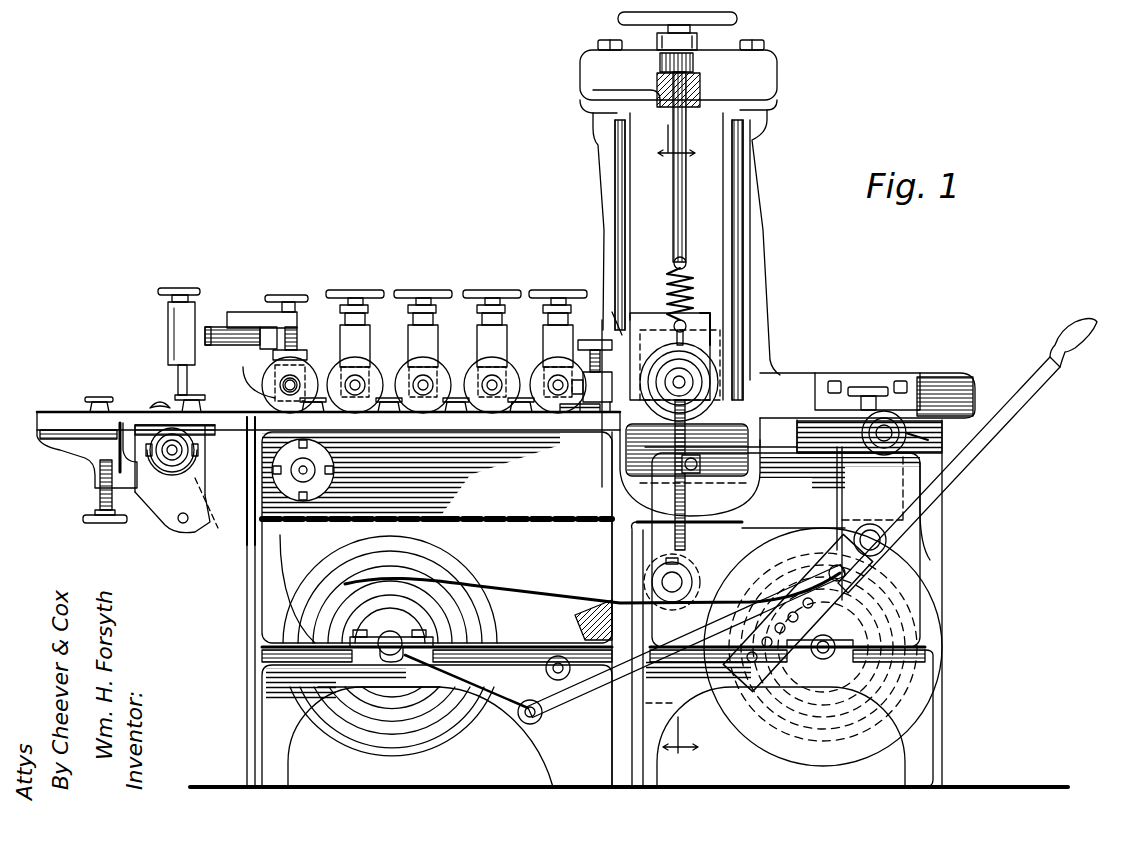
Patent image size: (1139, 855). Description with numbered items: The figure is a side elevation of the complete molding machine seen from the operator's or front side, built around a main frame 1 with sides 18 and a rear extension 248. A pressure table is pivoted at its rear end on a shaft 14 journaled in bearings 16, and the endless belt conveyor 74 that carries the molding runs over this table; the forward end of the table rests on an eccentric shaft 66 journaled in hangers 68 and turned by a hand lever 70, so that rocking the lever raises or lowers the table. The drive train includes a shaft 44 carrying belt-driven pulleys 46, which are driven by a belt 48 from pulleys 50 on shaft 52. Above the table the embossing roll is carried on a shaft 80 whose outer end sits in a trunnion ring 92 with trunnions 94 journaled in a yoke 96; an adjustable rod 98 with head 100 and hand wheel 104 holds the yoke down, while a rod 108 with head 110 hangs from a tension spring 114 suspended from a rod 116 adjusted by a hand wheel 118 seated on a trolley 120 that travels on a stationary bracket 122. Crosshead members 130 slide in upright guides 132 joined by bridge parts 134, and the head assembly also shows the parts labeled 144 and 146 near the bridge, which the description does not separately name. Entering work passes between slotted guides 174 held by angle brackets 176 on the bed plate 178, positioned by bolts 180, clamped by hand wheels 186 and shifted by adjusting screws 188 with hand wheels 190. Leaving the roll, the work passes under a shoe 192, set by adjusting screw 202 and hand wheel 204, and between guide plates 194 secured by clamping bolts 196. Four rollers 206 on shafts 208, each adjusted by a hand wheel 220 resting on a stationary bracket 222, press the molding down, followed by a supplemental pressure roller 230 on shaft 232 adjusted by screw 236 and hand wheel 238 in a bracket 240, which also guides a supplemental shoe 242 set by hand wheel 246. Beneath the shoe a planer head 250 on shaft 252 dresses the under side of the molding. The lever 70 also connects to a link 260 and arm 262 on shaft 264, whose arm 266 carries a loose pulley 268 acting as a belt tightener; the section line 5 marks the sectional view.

The main frame 1 is at (255, 565).
The section line 5 is at (678, 453).
The shaft 14 is at (304, 488).
The bearings 16 is at (322, 478).
The sides 18 is at (530, 523).
The shaft 44 is at (390, 658).
The belt-driven pulleys 46 is at (426, 716).
The belt 48 is at (540, 594).
The pulleys 50 is at (825, 712).
The shaft 52 is at (835, 648).
The eccentric shaft 66 is at (890, 540).
The hangers 68 is at (837, 488).
The hand lever 70 is at (1003, 420).
The belt conveyor 74 is at (478, 523).
The shaft 80 is at (672, 362).
The trunnion ring 92 is at (700, 420).
The trunnions 94 is at (715, 378).
The yoke 96 is at (705, 358).
The adjustable rod 98 is at (680, 470).
The head 100 is at (665, 430).
The hand wheel 104 is at (640, 524).
The rod 108 is at (695, 312).
The head 110 is at (700, 335).
The tension spring 114 is at (696, 262).
The rod 116 is at (685, 224).
The hand wheel 118 is at (736, 18).
The trolley 120 is at (690, 48).
The stationary bracket 122 is at (658, 62).
The crosshead members 130 is at (676, 375).
The upright guides 132 is at (625, 172).
The bridge parts 134 is at (770, 72).
The bushing 144 is at (770, 97).
The cap flange 146 is at (655, 98).
The guides 174 is at (970, 378).
The angle brackets 176 is at (812, 373).
The bed plate 178 is at (805, 400).
The bolts 180 is at (835, 381).
The hand wheels 186 is at (870, 382).
The adjusting screws 188 is at (888, 425).
The hand wheels 190 is at (906, 433).
The shoe 192 is at (650, 420).
The guide plates 194 is at (456, 412).
The clamping bolts 196 is at (390, 412).
The adjusting screw 202 is at (625, 415).
The hand wheel 204 is at (595, 340).
The rollers 206 is at (405, 375).
The shaft 208 is at (349, 381).
The hand wheel 220 is at (440, 290).
The stationary bracket 222 is at (420, 305).
The supplemental pressure roller 230 is at (270, 372).
The shaft 232 is at (282, 385).
The adjusting screw 236 is at (297, 340).
The hand wheel 238 is at (275, 300).
The bracket 240 is at (222, 328).
The supplemental shoe 242 is at (160, 400).
The hand wheel 246 is at (178, 288).
The extension 248 is at (168, 515).
The planer head 250 is at (248, 535).
The shaft 252 is at (150, 450).
The link 260 is at (584, 716).
The arm 262 is at (522, 721).
The shaft 264 is at (556, 658).
The arm 266 is at (590, 628).
The loose pulley 268 is at (692, 576).